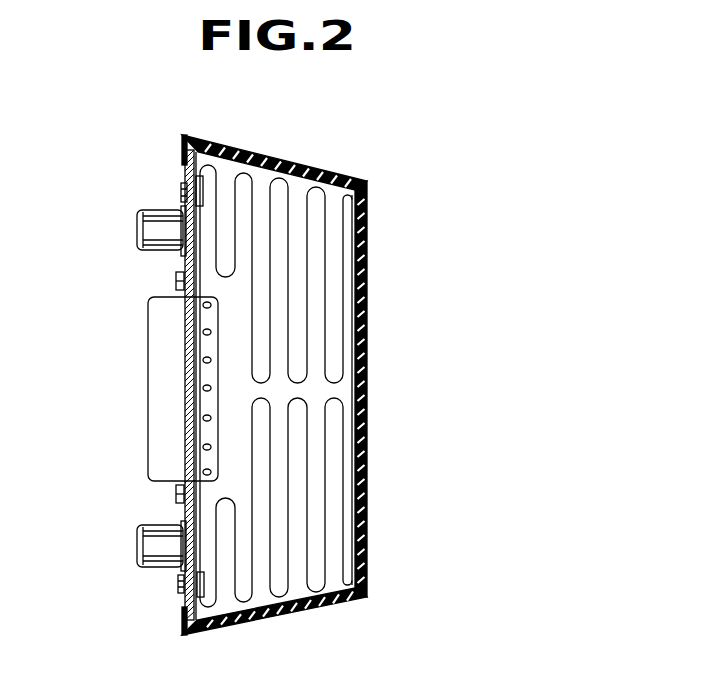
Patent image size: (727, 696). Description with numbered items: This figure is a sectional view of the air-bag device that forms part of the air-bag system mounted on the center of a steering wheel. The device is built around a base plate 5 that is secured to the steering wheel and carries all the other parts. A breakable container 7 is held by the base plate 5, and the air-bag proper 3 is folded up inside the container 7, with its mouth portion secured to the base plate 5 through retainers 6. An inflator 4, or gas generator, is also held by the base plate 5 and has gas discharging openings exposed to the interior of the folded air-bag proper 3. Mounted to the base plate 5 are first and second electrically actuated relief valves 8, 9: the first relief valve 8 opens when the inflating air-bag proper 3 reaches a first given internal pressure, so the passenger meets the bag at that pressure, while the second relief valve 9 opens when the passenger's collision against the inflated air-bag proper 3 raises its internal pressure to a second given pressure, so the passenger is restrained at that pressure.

The air-bag proper 3 is at (342, 445).
The inflator 4 is at (148, 460).
The base plate 5 is at (193, 603).
The retainers 6 is at (203, 192).
The breakable container 7 is at (367, 330).
The first relief valve 8 is at (133, 233).
The second relief valve 9 is at (137, 553).